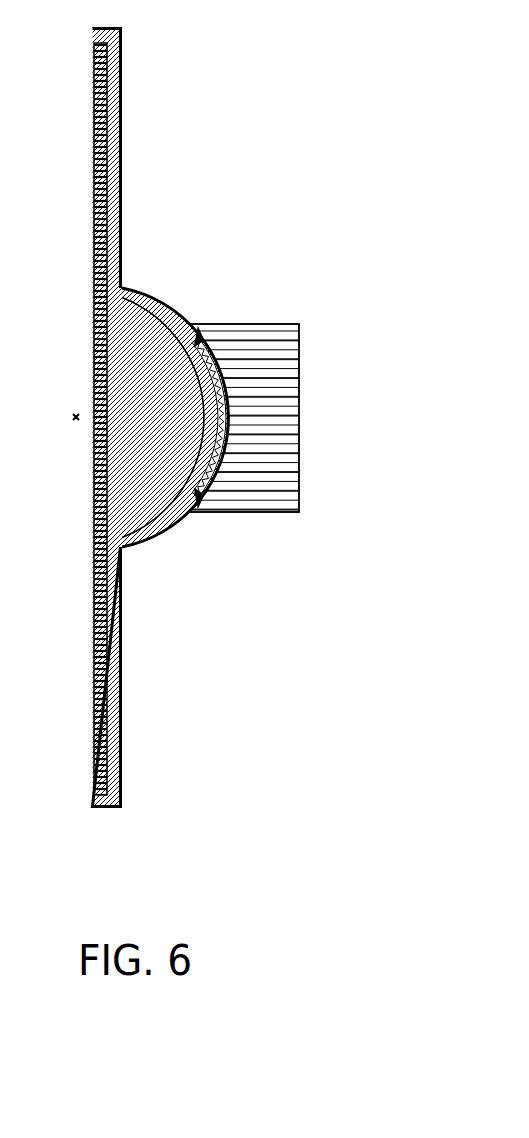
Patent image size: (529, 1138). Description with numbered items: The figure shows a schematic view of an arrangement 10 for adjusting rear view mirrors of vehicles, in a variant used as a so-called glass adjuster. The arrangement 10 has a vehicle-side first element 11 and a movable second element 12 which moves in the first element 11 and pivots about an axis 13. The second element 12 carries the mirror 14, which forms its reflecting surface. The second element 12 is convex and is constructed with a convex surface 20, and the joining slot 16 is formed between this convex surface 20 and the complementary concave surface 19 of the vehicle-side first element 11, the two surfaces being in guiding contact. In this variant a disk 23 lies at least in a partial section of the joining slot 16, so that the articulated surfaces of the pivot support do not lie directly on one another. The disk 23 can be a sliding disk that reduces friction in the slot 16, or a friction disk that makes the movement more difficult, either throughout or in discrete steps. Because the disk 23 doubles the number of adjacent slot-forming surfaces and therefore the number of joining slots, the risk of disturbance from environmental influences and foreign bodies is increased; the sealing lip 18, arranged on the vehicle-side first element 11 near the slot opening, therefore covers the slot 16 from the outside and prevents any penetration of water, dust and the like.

The arrangement for adjusting rear view mirrors 10 is at (266, 96).
The vehicle-side first element 11 is at (320, 337).
The second element 12 is at (143, 227).
The axis 13 is at (78, 424).
The mirror 14 is at (93, 659).
The joining slot 16 is at (193, 364).
The sealing lip 18 is at (199, 511).
The concave surface 19 is at (200, 479).
The convex surface 20 is at (163, 304).
The disk 23 is at (211, 407).